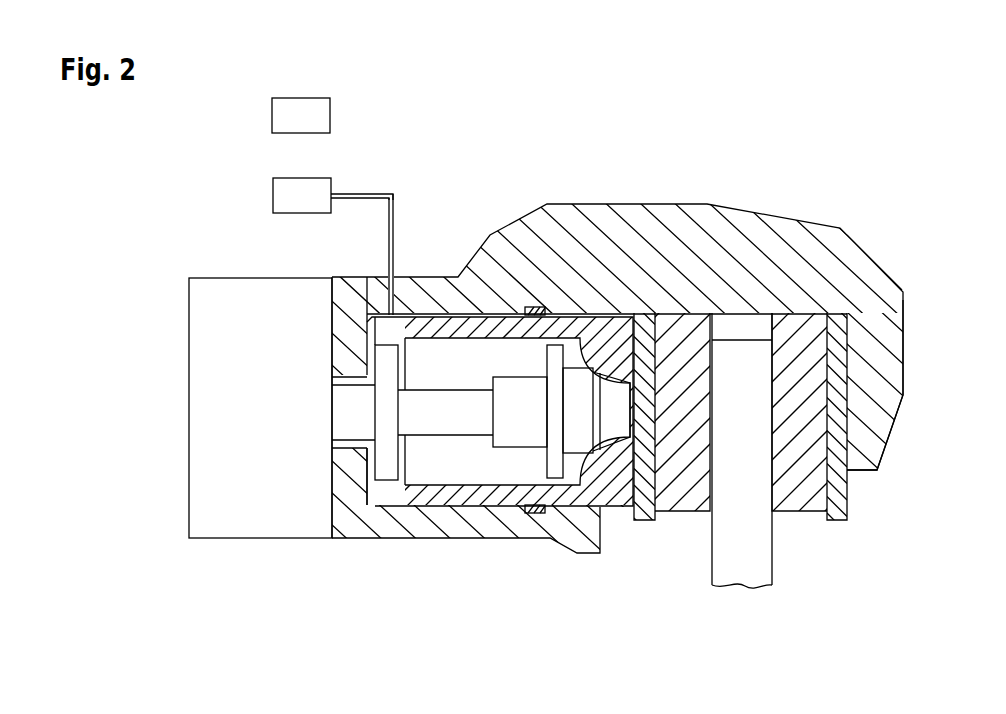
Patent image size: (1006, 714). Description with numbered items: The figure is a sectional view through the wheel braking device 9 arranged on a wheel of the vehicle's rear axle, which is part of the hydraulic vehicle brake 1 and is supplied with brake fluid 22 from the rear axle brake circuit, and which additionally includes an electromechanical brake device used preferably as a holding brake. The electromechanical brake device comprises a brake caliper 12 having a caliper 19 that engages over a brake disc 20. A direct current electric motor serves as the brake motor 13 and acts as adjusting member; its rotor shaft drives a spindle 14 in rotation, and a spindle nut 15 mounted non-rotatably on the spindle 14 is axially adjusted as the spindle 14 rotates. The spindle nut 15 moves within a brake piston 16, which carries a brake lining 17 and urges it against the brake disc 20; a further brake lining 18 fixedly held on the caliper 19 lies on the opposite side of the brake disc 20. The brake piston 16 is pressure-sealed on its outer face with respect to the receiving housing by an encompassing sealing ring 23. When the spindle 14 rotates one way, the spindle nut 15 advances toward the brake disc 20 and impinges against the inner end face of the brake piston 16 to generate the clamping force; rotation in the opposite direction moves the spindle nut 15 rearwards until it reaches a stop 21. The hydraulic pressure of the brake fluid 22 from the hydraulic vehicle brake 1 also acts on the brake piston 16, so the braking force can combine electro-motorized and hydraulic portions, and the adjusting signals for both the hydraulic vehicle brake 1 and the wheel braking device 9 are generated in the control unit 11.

The hydraulic vehicle brake 1 is at (273, 194).
The wheel braking device 9 is at (826, 178).
The control unit 11 is at (272, 114).
The brake caliper 12 is at (634, 215).
The brake motor 13 is at (256, 538).
The spindle 14 is at (443, 413).
The spindle nut 15 is at (522, 423).
The brake piston 16 is at (485, 495).
The brake lining 17 is at (682, 500).
The further brake lining 18 is at (797, 495).
The caliper 19 is at (905, 373).
The brake disc 20 is at (742, 565).
The stop 21 is at (393, 470).
The brake fluid 22 is at (388, 492).
The sealing ring 23 is at (542, 513).